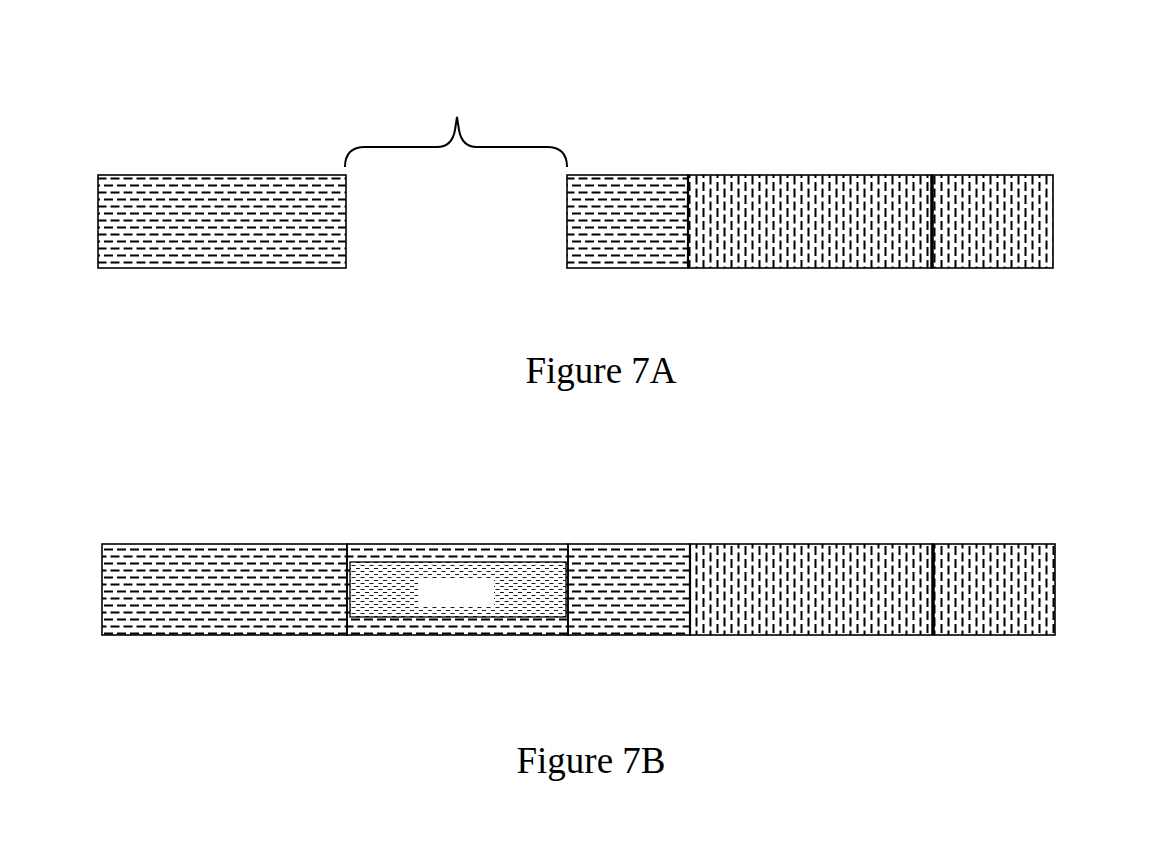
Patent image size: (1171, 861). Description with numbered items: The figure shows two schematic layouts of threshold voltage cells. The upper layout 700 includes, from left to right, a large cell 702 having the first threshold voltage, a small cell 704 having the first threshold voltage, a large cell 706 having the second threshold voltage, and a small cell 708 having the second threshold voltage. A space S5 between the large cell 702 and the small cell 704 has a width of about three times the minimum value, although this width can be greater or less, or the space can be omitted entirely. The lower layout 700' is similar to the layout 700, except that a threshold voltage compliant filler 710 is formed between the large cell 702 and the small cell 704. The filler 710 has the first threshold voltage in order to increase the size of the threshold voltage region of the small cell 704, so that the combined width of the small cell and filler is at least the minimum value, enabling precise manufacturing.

In FIG. 7A, the layout 700 is at (622, 153).
In FIG. 7B, the layout 700' is at (627, 520).
In FIG. 7A, the large cell 702 is at (208, 175).
In FIG. 7B, the large cell 702 is at (208, 544).
In FIG. 7A, the small cell 704 is at (620, 175).
In FIG. 7B, the small cell 704 is at (610, 544).
In FIG. 7A, the large cell 706 is at (793, 175).
In FIG. 7B, the large cell 706 is at (790, 544).
In FIG. 7A, the small cell 708 is at (991, 175).
In FIG. 7B, the small cell 708 is at (991, 544).
In FIG. 7B, the filler 710 is at (426, 544).
In FIG. 7A, the space S5 is at (456, 127).